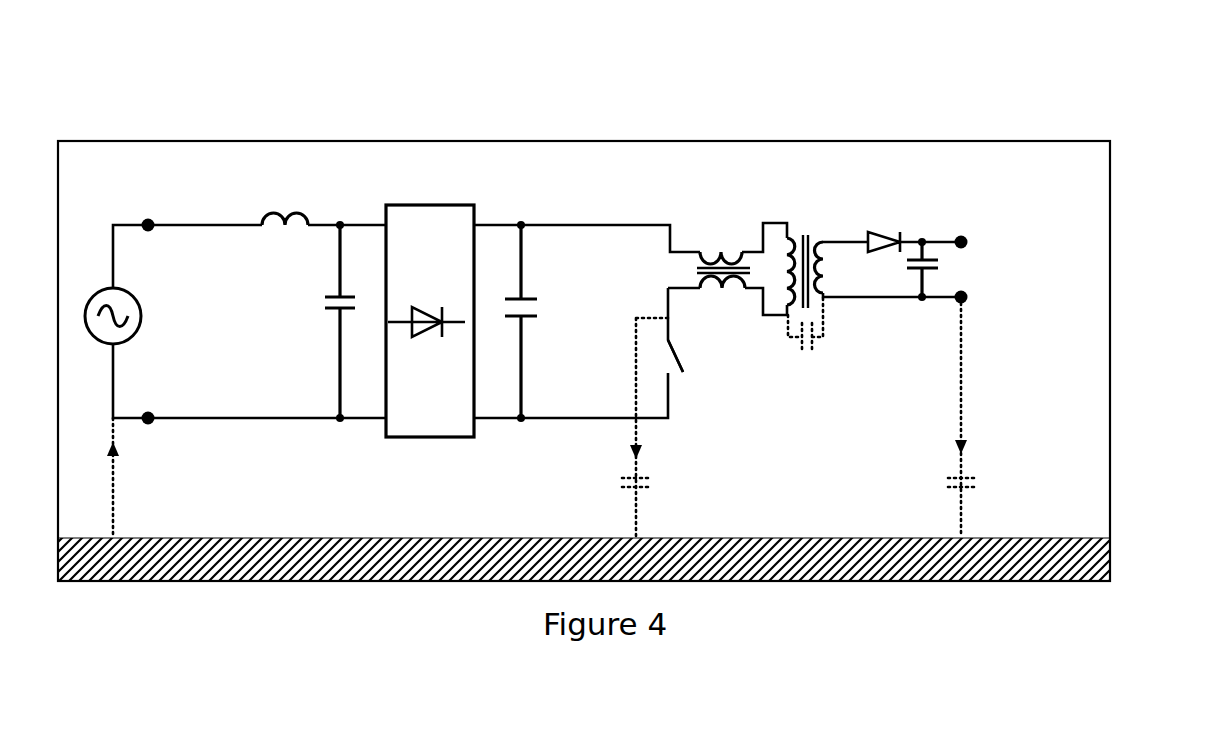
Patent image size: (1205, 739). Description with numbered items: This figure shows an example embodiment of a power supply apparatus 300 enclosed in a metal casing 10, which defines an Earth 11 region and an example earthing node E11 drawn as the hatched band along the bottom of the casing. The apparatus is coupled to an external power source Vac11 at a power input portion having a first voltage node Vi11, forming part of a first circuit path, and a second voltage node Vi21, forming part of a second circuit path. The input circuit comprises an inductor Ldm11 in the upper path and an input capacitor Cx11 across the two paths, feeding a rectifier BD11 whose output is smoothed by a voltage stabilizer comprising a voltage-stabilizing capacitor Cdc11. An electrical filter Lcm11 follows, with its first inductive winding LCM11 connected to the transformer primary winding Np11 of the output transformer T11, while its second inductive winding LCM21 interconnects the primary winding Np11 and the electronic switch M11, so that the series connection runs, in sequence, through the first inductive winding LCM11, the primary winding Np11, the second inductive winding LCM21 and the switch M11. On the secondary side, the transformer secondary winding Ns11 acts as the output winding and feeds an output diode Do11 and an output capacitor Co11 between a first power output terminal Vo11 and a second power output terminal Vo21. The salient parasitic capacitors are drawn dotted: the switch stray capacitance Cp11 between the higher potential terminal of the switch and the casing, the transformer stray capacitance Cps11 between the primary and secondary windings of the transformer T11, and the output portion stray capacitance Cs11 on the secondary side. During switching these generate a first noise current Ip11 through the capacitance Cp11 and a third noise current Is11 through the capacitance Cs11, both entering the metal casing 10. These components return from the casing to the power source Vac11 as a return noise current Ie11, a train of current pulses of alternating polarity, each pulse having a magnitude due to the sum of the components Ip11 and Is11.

The power supply apparatus 300 is at (118, 126).
The metal casing 10 is at (1072, 141).
The external power source Vac11 is at (147, 319).
The first voltage node Vi11 is at (158, 232).
The second voltage node Vi21 is at (160, 430).
The return noise current Ie11 is at (100, 463).
The earthing node E11 is at (128, 528).
The Earth Earth11 is at (330, 522).
The inductor Ldm11 is at (286, 214).
The input capacitor Cx11 is at (324, 310).
The rectifier BD11 is at (477, 204).
The voltage-stabilizing capacitor Cdc11 is at (532, 323).
The first inductive winding of the electrical filter LCM11 is at (706, 236).
The second inductive winding of the electrical filter LCM21 is at (690, 302).
The electrical filter Lcm11 is at (672, 265).
The electronic switch M11 is at (690, 360).
The output transformer T11 is at (806, 229).
The transformer primary winding Np11 is at (774, 240).
The transformer secondary winding Ns11 is at (835, 254).
The transformer stray capacitance Cps11 is at (828, 350).
The output diode Do11 is at (890, 230).
The first power output terminal Vo11 is at (968, 233).
The output capacitor Co11 is at (950, 261).
The power output terminal Vo21 is at (970, 305).
The third noise current Is11 is at (945, 449).
The output portion stray capacitance Cs11 is at (988, 481).
The first noise current Ip11 is at (620, 450).
The switch stray capacitance Cp11 is at (660, 483).